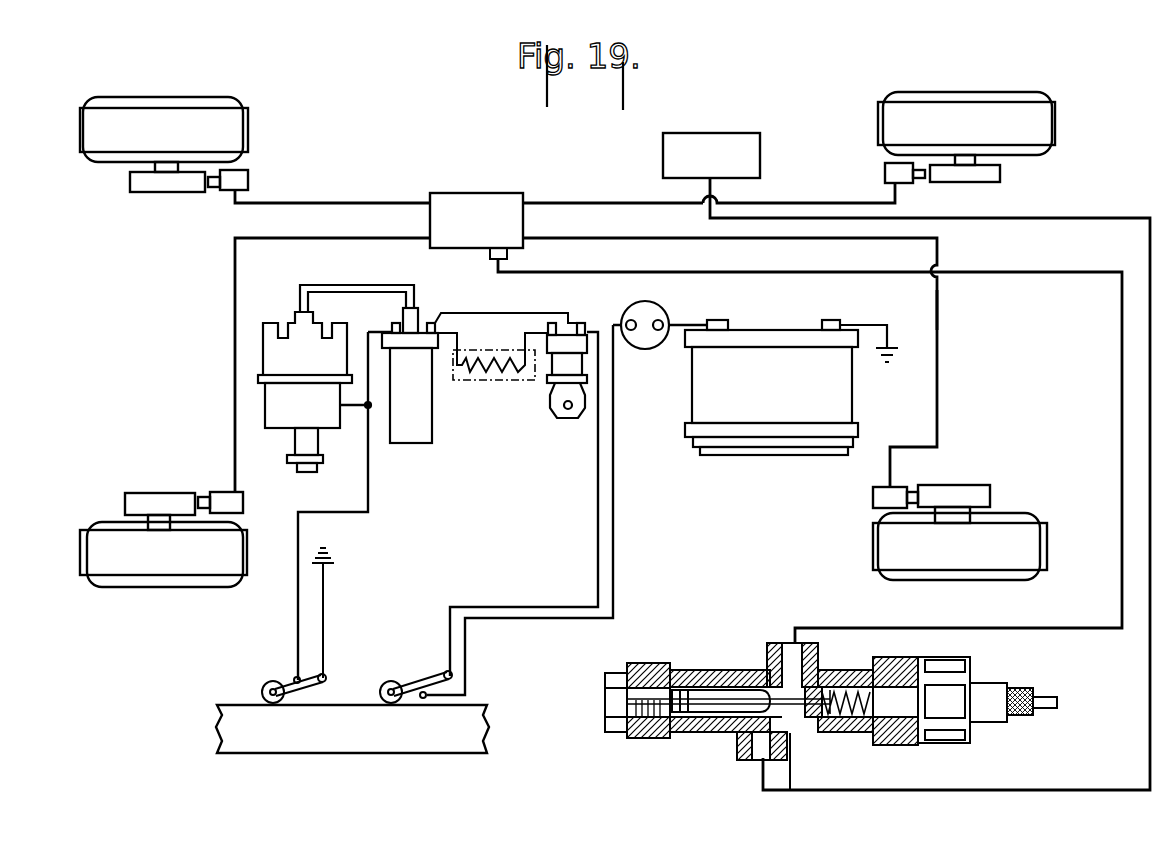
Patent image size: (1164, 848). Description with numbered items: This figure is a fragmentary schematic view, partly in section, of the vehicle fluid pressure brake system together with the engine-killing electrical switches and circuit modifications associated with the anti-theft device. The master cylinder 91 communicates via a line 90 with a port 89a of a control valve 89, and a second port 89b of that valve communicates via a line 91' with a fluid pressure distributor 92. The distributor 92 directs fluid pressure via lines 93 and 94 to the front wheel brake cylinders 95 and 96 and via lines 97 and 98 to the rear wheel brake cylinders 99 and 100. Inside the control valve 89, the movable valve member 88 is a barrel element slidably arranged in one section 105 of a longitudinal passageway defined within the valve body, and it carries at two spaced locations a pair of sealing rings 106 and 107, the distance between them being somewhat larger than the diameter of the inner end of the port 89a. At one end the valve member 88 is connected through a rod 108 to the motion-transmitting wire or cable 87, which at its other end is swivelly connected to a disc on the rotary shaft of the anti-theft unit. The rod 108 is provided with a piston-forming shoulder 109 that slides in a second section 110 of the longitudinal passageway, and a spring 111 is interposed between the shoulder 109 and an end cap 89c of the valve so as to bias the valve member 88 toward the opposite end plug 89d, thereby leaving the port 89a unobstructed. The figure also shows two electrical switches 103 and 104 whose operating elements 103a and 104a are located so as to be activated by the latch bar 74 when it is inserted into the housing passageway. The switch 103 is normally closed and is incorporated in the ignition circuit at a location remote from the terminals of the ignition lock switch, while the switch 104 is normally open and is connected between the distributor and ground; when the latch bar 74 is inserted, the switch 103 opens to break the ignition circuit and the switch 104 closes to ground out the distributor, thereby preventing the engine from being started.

The latch bar 74 is at (340, 742).
The motion-transmitting wire or cable 87 is at (1052, 698).
The movable valve member 88 is at (712, 695).
The control valve 89 is at (652, 740).
The port 89a is at (787, 762).
The port 89b is at (768, 650).
The end cap 89c is at (895, 745).
The end plug 89d is at (605, 700).
The line 90 is at (1148, 728).
The master cylinder 91 is at (682, 155).
The line 91' is at (810, 451).
The fluid pressure distributor 92 is at (477, 195).
The line 93 is at (346, 202).
The line 94 is at (293, 243).
The front wheel brake cylinder 95 is at (248, 170).
The front wheel brake cylinder 96 is at (212, 492).
The line 97 is at (798, 202).
The line 98 is at (940, 327).
The rear wheel brake cylinder 99 is at (885, 170).
The rear wheel brake cylinder 100 is at (873, 503).
The electrical switch 103 is at (433, 690).
The operating element 103a is at (405, 665).
The electrical switch 104 is at (310, 690).
The operating element 104a is at (263, 688).
The section of longitudinal passageway 105 is at (692, 722).
The sealing ring 106 is at (722, 735).
The sealing ring 107 is at (685, 672).
The rod 108 is at (838, 672).
The piston-forming shoulder 109 is at (868, 665).
The second section of longitudinal passageway 110 is at (788, 737).
The spring 111 is at (920, 740).